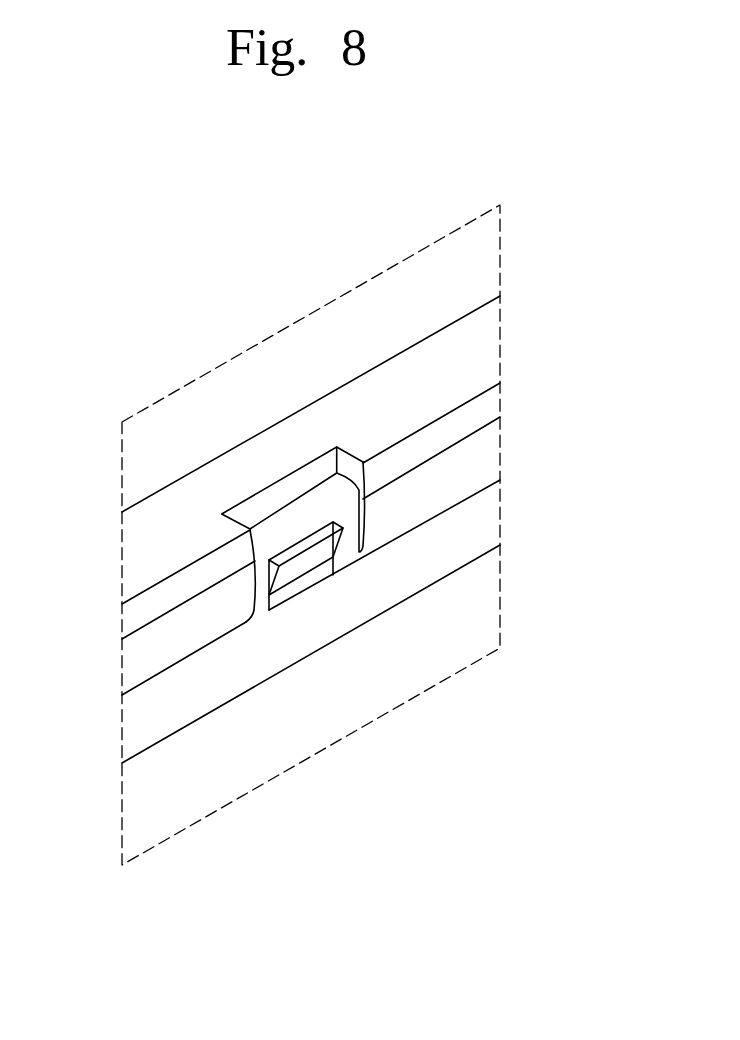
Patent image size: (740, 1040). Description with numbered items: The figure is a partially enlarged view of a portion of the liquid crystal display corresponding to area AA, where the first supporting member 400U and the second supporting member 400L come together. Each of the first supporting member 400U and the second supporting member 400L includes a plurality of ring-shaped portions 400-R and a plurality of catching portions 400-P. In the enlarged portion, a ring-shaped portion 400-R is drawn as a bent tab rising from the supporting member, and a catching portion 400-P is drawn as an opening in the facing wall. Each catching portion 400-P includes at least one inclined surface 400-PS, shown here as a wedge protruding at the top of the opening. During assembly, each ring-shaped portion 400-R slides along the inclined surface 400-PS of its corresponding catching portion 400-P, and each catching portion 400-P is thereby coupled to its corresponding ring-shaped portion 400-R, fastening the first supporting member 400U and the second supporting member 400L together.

The area AA is at (195, 380).
The first supporting member 400U is at (490, 347).
The second supporting member 400L is at (137, 728).
The ring-shaped portion 400-R is at (345, 505).
The catching portion 400-P is at (338, 521).
The inclined surface 400-PS is at (312, 554).